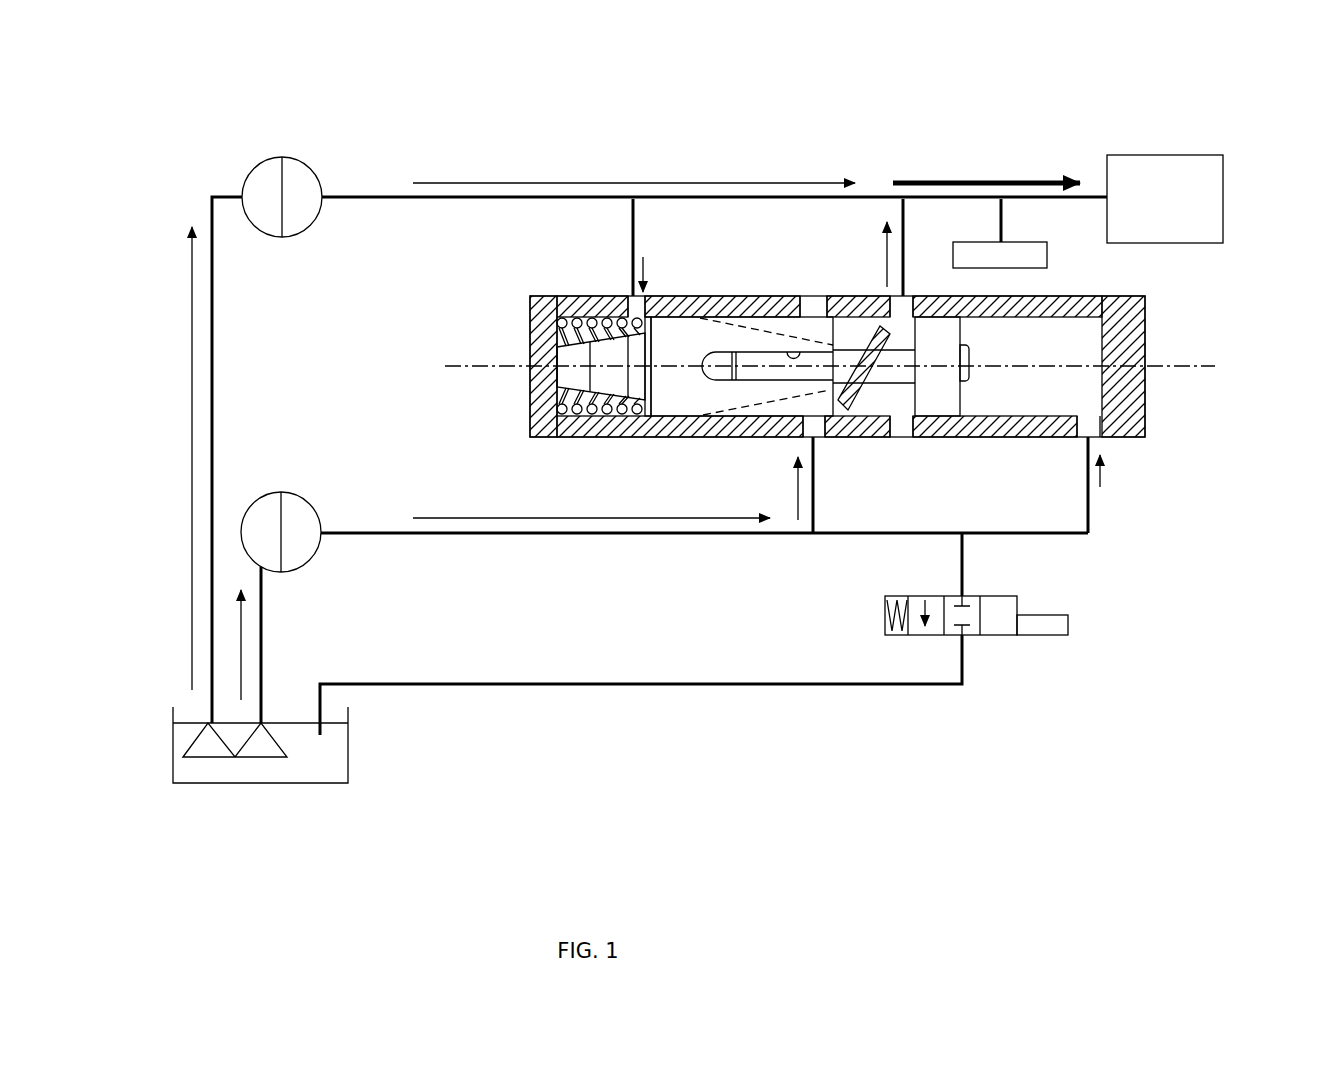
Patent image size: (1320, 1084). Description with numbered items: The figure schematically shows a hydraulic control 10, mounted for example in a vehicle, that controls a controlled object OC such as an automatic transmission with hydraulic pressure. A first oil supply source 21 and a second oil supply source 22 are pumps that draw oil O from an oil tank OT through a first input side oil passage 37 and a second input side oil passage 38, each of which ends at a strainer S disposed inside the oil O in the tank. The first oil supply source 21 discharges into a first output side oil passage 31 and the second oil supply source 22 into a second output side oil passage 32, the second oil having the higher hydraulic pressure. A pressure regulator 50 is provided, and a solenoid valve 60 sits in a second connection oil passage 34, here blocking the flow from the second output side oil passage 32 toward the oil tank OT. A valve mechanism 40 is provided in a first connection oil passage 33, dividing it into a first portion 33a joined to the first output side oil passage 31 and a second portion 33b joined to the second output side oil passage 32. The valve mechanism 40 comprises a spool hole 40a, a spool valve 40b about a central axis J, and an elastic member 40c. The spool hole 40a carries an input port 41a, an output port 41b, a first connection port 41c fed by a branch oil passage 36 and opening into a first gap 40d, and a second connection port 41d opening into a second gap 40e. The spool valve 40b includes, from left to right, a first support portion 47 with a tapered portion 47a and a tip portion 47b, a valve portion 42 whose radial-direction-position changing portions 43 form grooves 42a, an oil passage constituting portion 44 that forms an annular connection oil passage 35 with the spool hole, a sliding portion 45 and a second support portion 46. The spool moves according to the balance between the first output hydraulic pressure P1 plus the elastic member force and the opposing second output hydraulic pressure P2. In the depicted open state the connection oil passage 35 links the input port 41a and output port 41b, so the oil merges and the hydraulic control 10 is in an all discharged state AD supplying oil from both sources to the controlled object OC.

The hydraulic control 10 is at (1068, 116).
The first oil supply source 21 is at (306, 150).
The second oil supply source 22 is at (306, 485).
The first output side oil passage 31 is at (431, 200).
The second output side oil passage 32 is at (420, 535).
The first connection oil passage 33 is at (826, 476).
The first portion 33a is at (906, 245).
The second portion 33b is at (818, 496).
The second connection oil passage 34 is at (964, 558).
The connection oil passage 35 is at (851, 332).
The branch oil passage 36 is at (635, 225).
The first input side oil passage 37 is at (214, 323).
The second input side oil passage 38 is at (263, 621).
The valve mechanism 40 is at (1160, 336).
The spool hole 40a is at (1036, 421).
The spool valve 40b is at (992, 332).
The elastic member 40c is at (605, 413).
The first gap 40d is at (563, 383).
The second gap 40e is at (1058, 385).
The input port 41a is at (812, 432).
The output port 41b is at (904, 296).
The first connection port 41c is at (625, 298).
The second connection port 41d is at (1102, 432).
The valve portion 42 is at (670, 395).
The groove 42a is at (798, 320).
The radial-direction-position changing portion 43 is at (785, 326).
The oil passage constituting portion 44 is at (880, 382).
The sliding portion 45 is at (942, 395).
The second support portion 46 is at (970, 385).
The first support portion 47 is at (475, 248).
The tapered portion 47a is at (614, 345).
The tip portion 47b is at (578, 355).
The pressure regulator 50 is at (1035, 255).
The solenoid valve 60 is at (1052, 660).
The controlled object OC is at (1210, 201).
The all discharged state AD is at (999, 178).
The oil tank OT is at (173, 738).
The oil O is at (330, 758).
The strainer S is at (261, 750).
The first output hydraulic pressure P1 is at (662, 274).
The second output hydraulic pressure P2 is at (1118, 471).
The central axis J is at (1218, 372).